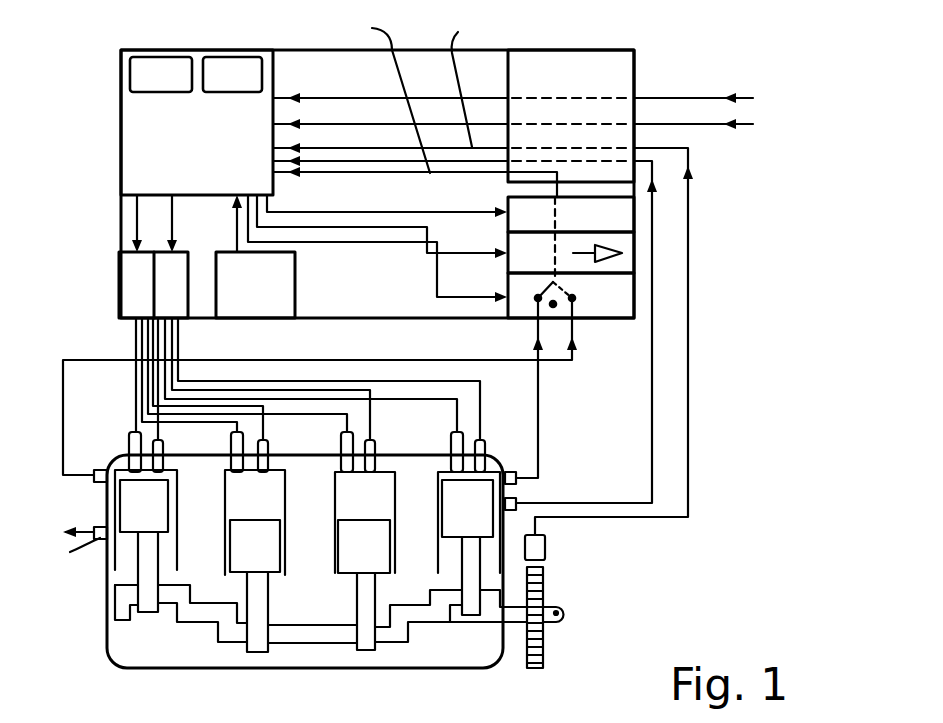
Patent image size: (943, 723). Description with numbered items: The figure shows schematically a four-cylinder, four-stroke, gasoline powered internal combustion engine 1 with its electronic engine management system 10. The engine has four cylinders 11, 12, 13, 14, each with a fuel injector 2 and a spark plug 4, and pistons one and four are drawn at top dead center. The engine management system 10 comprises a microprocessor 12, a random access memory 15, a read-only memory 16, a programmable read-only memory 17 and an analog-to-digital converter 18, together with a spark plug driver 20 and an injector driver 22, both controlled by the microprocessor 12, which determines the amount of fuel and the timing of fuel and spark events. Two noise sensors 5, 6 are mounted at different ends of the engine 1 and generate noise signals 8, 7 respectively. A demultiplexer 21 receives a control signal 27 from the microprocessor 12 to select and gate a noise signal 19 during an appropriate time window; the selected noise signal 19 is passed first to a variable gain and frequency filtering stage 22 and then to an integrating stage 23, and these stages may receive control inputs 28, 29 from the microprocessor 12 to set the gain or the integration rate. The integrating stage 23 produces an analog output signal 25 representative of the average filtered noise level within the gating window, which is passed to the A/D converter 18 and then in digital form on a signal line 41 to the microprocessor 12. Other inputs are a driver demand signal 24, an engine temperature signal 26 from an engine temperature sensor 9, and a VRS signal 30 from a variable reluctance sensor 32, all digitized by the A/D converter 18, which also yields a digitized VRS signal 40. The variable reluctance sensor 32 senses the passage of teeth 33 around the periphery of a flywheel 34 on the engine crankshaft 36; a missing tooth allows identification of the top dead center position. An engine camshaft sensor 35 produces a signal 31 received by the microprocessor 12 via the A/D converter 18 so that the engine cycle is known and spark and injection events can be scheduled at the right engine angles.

The internal combustion engine 1 is at (98, 650).
The fuel injector 2 is at (165, 458).
The spark plug 4 is at (127, 450).
The noise sensor 5 is at (92, 479).
The noise sensor 6 is at (516, 488).
The noise signal 7 is at (538, 431).
The noise signal 8 is at (61, 413).
The engine temperature sensor 9 is at (70, 552).
The electronic engine management system 10 is at (300, 50).
The cylinder 11 is at (115, 566).
The microprocessor 12 is at (128, 162).
The cylinder 13 is at (340, 516).
The cylinder 14 is at (438, 516).
The random access memory 15 is at (150, 58).
The read-only memory 16 is at (238, 58).
The programmable read-only memory 17 is at (258, 305).
The analog-to-digital converter 18 is at (538, 58).
The selected and gated noise signal 19 is at (546, 282).
The spark plug driver 20 is at (119, 298).
The demultiplexer 21 is at (634, 307).
The variable gain and frequency filtering stage 22 is at (634, 268).
The integrating stage 23 is at (634, 232).
The driver demand signal 24 is at (636, 98).
The integrated output signal 25 is at (556, 182).
The engine temperature signal 26 is at (653, 124).
The control signal 27 is at (340, 243).
The control input 28 is at (387, 230).
The control input 29 is at (427, 232).
The VRS signal 30 is at (688, 176).
The camshaft sensor signal 31 is at (652, 360).
The variable reluctance sensor 32 is at (545, 549).
The teeth 33 is at (543, 646).
The flywheel 34 is at (543, 584).
The engine camshaft sensor 35 is at (516, 497).
The engine crankshaft 36 is at (408, 638).
The digitized VRS signal 40 is at (473, 81).
The signal line 41 is at (385, 94).